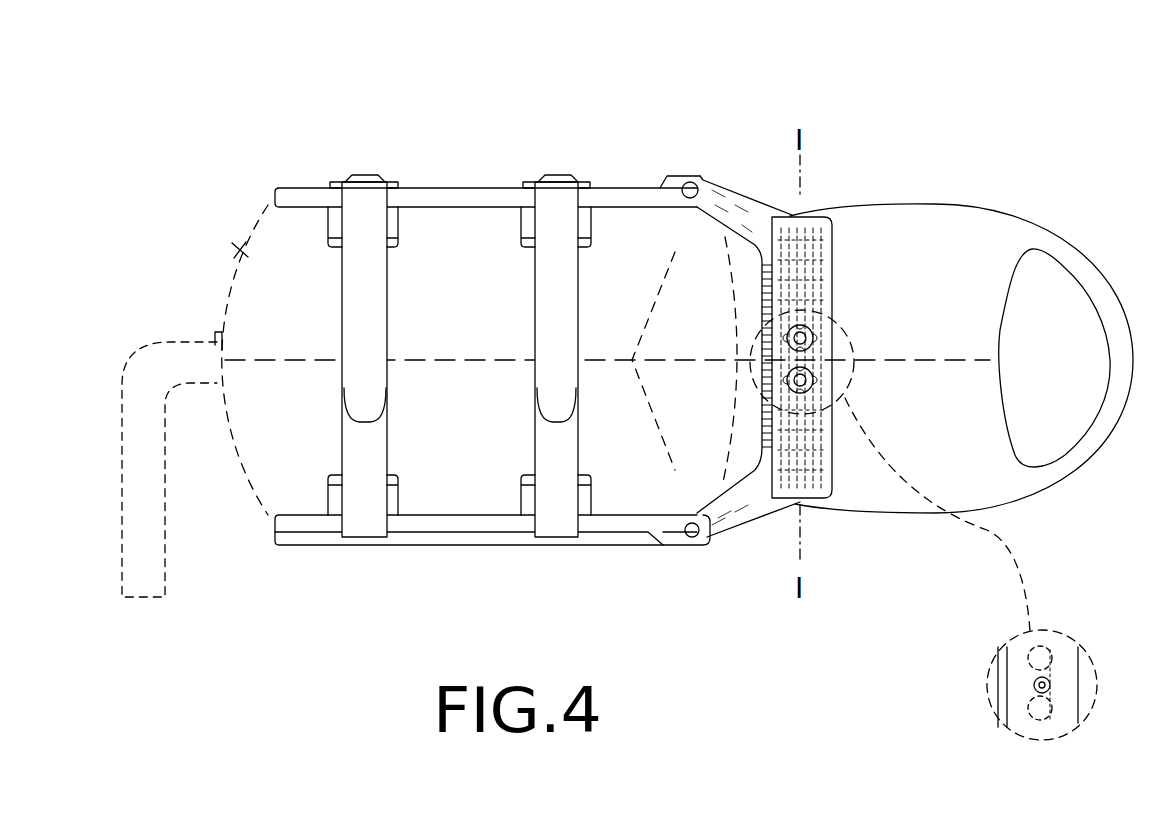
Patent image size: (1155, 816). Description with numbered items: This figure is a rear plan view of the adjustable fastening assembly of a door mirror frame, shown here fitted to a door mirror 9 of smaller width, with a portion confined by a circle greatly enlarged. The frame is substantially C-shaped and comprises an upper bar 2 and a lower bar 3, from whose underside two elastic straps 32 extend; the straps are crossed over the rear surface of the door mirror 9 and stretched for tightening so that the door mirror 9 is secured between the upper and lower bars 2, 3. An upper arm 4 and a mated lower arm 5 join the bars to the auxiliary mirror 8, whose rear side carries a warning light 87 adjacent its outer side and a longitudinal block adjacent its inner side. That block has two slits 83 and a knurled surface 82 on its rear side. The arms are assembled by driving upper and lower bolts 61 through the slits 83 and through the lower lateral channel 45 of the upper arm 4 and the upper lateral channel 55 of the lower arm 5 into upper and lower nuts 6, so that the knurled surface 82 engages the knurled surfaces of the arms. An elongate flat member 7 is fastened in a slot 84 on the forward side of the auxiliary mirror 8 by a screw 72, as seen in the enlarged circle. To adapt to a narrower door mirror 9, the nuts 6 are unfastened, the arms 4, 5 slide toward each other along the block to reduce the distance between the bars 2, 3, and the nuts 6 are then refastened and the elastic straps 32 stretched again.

The upper bar 2 is at (462, 197).
The lower bar 3 is at (455, 545).
The upper arm 4 is at (737, 193).
The lower arm 5 is at (722, 533).
The nut 6 is at (812, 336).
The elongate flat member 7 is at (1045, 640).
The auxiliary mirror 8 is at (977, 232).
The door mirror 9 is at (222, 236).
The elastic strap 32 is at (357, 447).
The lower lateral channel 45 is at (835, 330).
The upper lateral channel 55 is at (812, 380).
The bolt 61 is at (1010, 648).
The screw 72 is at (1050, 684).
The knurled surface 82 is at (830, 240).
The slit 83 is at (790, 218).
The slot 84 is at (1060, 735).
The warning light 87 is at (1043, 262).